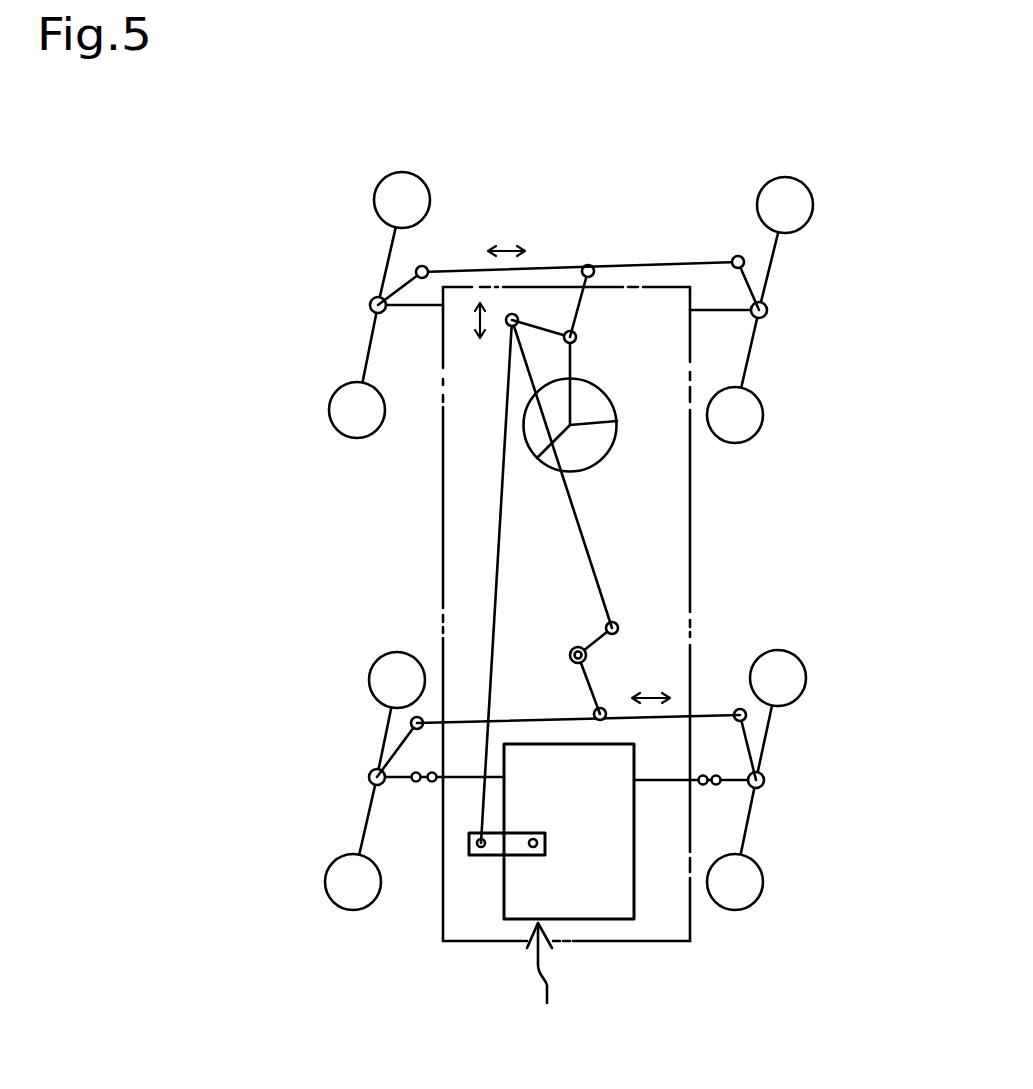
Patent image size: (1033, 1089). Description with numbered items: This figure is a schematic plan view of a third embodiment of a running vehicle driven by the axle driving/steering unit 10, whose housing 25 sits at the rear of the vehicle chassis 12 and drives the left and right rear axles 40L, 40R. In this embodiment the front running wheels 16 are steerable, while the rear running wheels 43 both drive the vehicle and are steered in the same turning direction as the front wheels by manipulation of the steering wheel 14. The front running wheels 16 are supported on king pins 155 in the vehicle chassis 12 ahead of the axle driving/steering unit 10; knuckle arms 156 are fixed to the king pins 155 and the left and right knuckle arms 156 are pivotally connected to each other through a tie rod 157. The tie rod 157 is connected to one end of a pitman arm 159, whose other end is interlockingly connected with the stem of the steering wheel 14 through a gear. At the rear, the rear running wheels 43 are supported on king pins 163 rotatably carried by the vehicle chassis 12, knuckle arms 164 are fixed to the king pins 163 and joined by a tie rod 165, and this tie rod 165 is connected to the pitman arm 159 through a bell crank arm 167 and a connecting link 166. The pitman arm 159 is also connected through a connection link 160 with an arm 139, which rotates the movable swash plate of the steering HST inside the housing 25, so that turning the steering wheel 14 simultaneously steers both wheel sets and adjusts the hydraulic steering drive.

The axle driving/steering unit 10 is at (549, 986).
The vehicle chassis 12 is at (620, 943).
The steering wheel 14 is at (613, 452).
The front running wheels 16 is at (402, 172).
The housing 25 is at (504, 905).
The left rear axle 40L is at (468, 780).
The right rear axle 40R is at (667, 783).
The rear running wheels 43 is at (380, 656).
The arm 139 is at (492, 855).
The king pins 155 is at (370, 305).
The knuckle arms 156 is at (426, 268).
The tie rod 157 is at (650, 262).
The pitman arm 159 is at (578, 292).
The connection link 160 is at (502, 477).
The king pins 163 is at (369, 778).
The knuckle arms 164 is at (405, 738).
The tie rod 165 is at (540, 722).
The connecting link 166 is at (571, 505).
The bell crank arm 167 is at (601, 638).